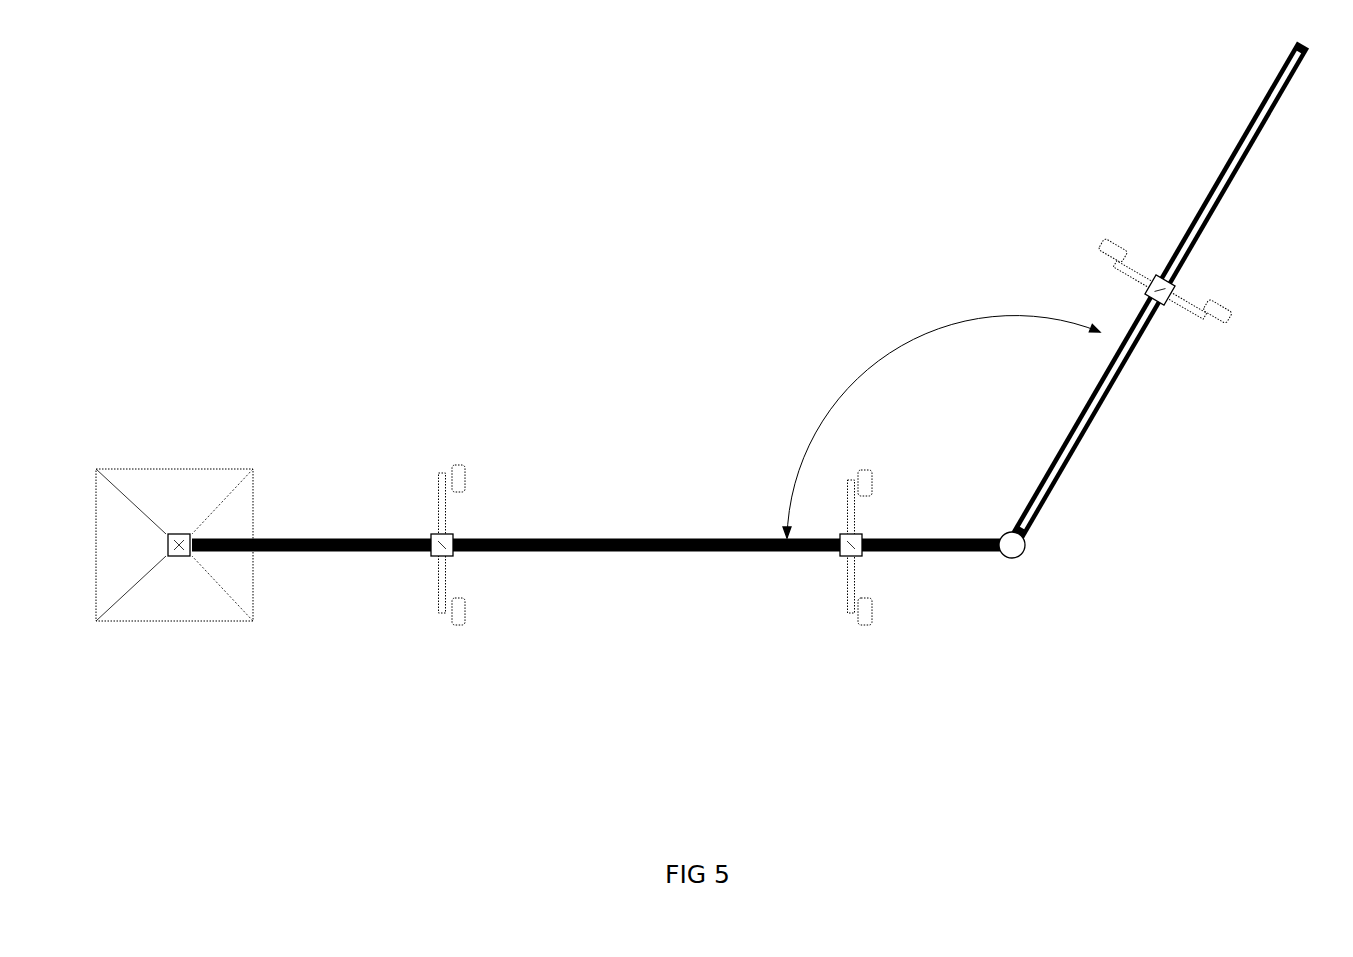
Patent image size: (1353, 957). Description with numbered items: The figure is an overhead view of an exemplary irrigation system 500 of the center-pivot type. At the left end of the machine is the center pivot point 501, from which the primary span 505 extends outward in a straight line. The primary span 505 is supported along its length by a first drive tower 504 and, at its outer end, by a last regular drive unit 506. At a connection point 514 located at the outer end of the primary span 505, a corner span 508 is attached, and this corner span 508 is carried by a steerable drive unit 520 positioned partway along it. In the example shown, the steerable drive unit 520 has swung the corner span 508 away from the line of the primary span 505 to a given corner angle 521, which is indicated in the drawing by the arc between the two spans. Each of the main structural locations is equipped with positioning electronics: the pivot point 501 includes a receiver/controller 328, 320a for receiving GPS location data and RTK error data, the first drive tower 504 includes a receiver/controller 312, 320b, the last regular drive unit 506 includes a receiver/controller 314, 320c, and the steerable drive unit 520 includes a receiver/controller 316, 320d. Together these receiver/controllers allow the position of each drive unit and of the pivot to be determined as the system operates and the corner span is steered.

The irrigation system 500 is at (719, 398).
The center pivot point 501 is at (202, 477).
The receiver/controller 328 is at (178, 642).
The receiver/controller 320a is at (192, 548).
The receiver/controller 312 is at (499, 527).
The receiver/controller 320b is at (447, 537).
The first drive tower 504 is at (465, 612).
The primary span 505 is at (633, 552).
The receiver/controller 314 is at (907, 568).
The receiver/controller 320c is at (862, 556).
The last regular drive unit (LRDU) 506 is at (865, 610).
The connection point 514 is at (1020, 550).
The corner angle 521 is at (907, 335).
The corner span 508 is at (1270, 122).
The receiver/controller 316 is at (1160, 383).
The receiver/controller 320d is at (1168, 300).
The steerable drive unit (SDU) 520 is at (1215, 328).